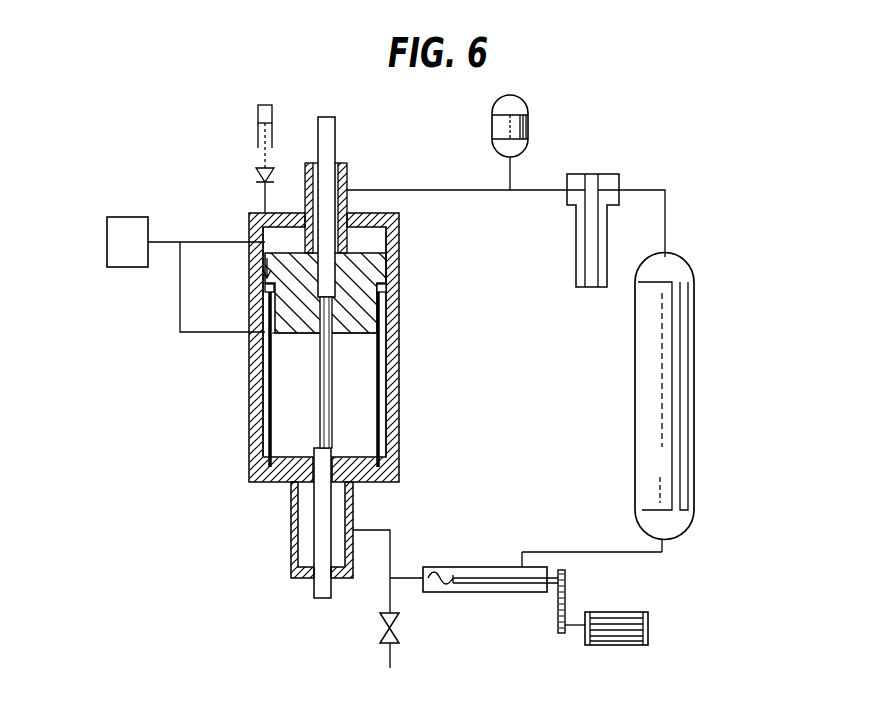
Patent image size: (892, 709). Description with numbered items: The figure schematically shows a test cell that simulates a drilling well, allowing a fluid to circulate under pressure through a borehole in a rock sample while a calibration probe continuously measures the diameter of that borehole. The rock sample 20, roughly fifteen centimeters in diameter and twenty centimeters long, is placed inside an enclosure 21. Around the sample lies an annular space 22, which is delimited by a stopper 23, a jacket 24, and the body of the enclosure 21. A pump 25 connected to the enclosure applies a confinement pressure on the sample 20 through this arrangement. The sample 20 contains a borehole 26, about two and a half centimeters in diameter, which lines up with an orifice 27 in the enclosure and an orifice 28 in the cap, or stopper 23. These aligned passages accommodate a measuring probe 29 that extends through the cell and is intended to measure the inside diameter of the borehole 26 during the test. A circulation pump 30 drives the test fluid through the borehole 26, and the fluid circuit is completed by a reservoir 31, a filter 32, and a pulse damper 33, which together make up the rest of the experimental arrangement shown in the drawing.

The sample 20 is at (357, 433).
The enclosure 21 is at (250, 400).
The annular space 22 is at (262, 447).
The stopper 23 is at (374, 283).
The jacket 24 is at (388, 372).
The pump 25 is at (125, 226).
The borehole 26 is at (333, 410).
The orifice 27 is at (293, 483).
The orifice 28 is at (385, 268).
The measuring probe 29 is at (318, 527).
The circulation pump 30 is at (500, 593).
The reservoir 31 is at (693, 407).
The filter 32 is at (598, 175).
The pulse damper 33 is at (528, 130).